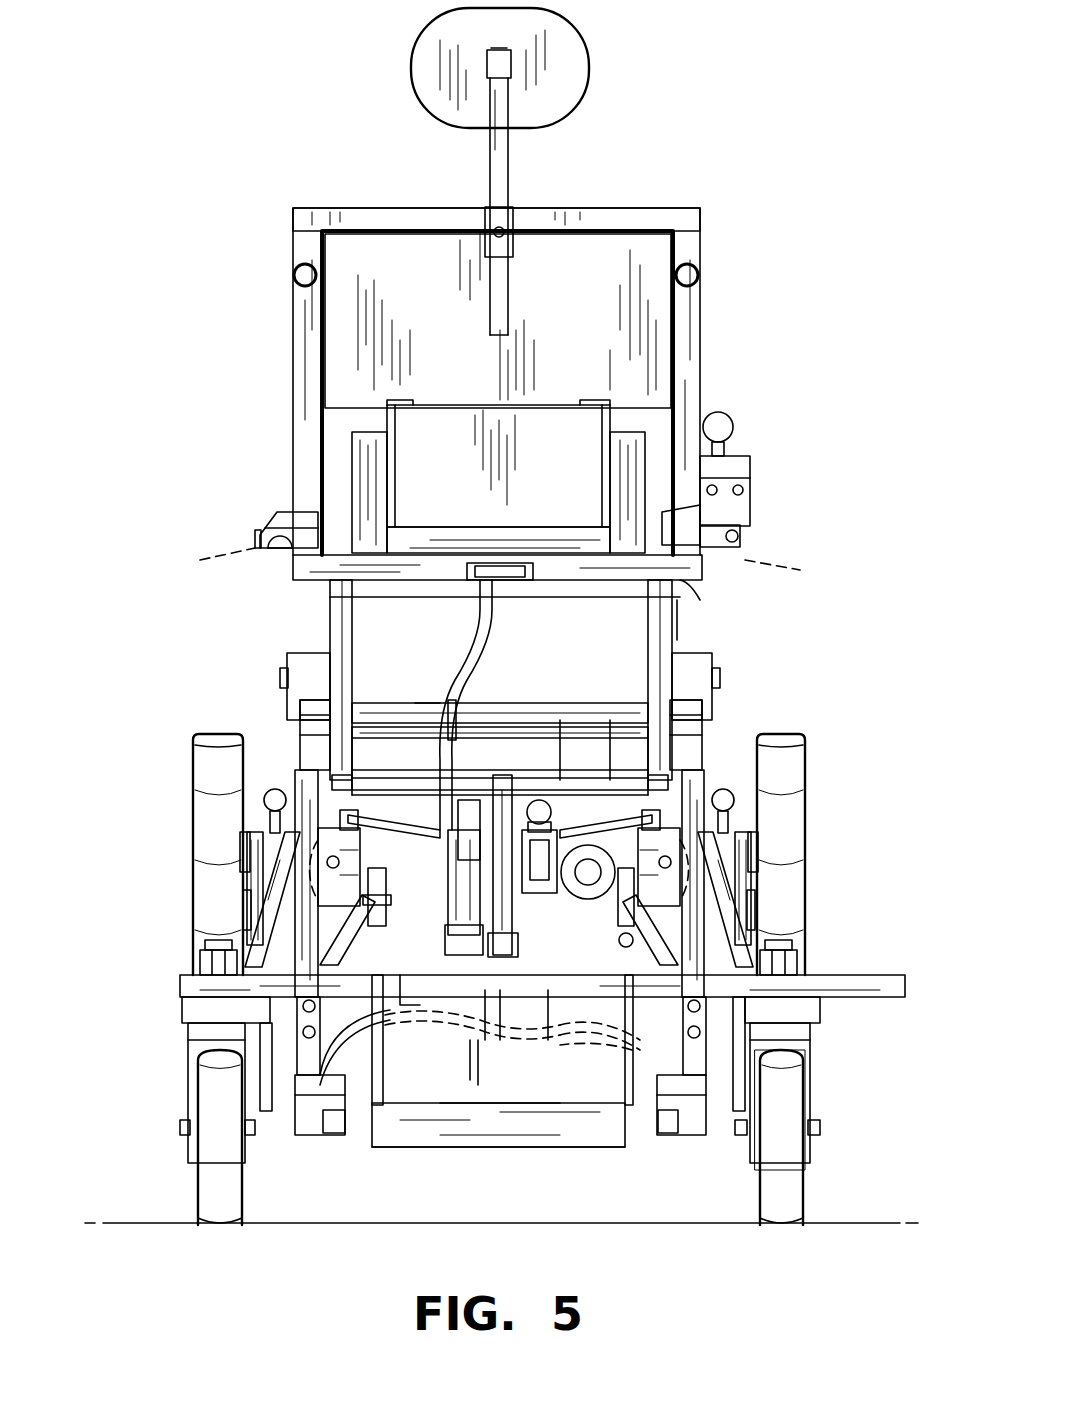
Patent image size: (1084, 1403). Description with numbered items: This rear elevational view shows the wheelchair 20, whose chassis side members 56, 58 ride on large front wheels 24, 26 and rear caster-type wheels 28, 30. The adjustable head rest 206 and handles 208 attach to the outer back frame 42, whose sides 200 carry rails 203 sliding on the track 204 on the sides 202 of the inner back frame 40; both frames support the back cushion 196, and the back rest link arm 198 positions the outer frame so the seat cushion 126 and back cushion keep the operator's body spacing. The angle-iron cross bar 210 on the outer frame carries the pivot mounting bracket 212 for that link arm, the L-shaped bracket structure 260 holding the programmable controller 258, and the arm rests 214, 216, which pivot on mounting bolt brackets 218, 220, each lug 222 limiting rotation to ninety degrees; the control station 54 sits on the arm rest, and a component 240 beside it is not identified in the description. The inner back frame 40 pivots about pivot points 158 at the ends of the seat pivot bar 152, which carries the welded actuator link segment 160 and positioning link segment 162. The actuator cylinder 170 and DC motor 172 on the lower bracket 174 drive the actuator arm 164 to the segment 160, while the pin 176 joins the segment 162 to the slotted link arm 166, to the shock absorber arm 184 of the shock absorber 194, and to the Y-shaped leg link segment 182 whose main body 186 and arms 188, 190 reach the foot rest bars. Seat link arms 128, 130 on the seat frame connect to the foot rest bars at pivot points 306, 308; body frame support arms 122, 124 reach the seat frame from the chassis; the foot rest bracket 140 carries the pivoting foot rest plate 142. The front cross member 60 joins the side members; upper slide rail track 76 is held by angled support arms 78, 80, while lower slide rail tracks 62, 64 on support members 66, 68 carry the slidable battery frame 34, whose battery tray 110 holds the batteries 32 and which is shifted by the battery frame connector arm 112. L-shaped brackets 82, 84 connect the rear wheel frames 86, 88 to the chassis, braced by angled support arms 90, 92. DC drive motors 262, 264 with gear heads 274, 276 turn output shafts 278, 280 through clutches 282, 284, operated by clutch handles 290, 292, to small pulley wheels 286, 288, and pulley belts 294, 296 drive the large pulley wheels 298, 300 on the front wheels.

The wheelchair 20 is at (168, 108).
The adjustable head rest 206 is at (598, 44).
The sides of the outer back frame 200 is at (292, 310).
The outer back frame 42 is at (703, 318).
The back cushion 196 is at (604, 287).
The handles 208 is at (296, 272).
The rails 203 is at (335, 325).
The programmable controller 258 is at (528, 415).
The track 204 is at (350, 433).
The sides of the inner back frame 202 is at (392, 462).
The L-shaped bracket structure 260 is at (420, 530).
The mounting bolt bracket 218 is at (266, 530).
The lug 222 is at (284, 512).
The joystick 240 is at (732, 422).
The control station 54 is at (752, 448).
The angle-iron cross bar 210 is at (320, 572).
The pivot mounting bracket 212 is at (512, 563).
The arm rest 214 is at (235, 552).
The arm rest 216 is at (780, 566).
The mounting bolt bracket 220 is at (703, 568).
The seat link arm 128 is at (328, 652).
The seat link arm 130 is at (690, 652).
The inner back frame 40 is at (685, 620).
The pivot point 306 is at (288, 668).
The pivot point 308 is at (712, 668).
The back rest link arm 198 is at (478, 630).
The seat cushion 126 is at (416, 700).
The actuator link segment 160 is at (495, 740).
The arm of leg link segment 188 is at (446, 738).
The arm of leg link segment 190 is at (562, 740).
The seat pivot bar 152 is at (608, 740).
The chassis side member 56 is at (300, 735).
The chassis side member 58 is at (706, 742).
The pivot points 158 is at (300, 768).
The front wheel 24 is at (215, 748).
The front wheel 26 is at (790, 742).
The clutch handle 290 is at (264, 796).
The clutch handle 292 is at (735, 800).
The gear head 274 is at (290, 830).
The gear head 276 is at (718, 832).
The DC drive motor 262 is at (318, 840).
The DC drive motor 264 is at (760, 858).
The output shaft 278 is at (247, 885).
The output shaft 280 is at (752, 882).
The clutch 282 is at (245, 852).
The clutch 284 is at (758, 850).
The small pulley wheel 286 is at (248, 908).
The small pulley wheel 288 is at (756, 908).
The angled support arm 90 is at (330, 950).
The angled support arm 92 is at (668, 948).
The angled support arm 78 is at (225, 963).
The angled support arm 80 is at (760, 930).
The wheel frame 86 is at (215, 965).
The wheel frame 88 is at (800, 960).
The L-shaped bracket 84 is at (800, 988).
The body frame support arm 122 is at (362, 815).
The body frame support arm 124 is at (618, 822).
The main body 186 is at (480, 830).
The actuator arm 164 is at (535, 808).
The shock absorber arm 184 is at (462, 948).
The shock absorber 194 is at (372, 912).
The upper slide rail track 76 is at (627, 932).
The actuator cylinder 170 is at (538, 890).
The DC motor 172 is at (588, 900).
The lower bracket 174 is at (383, 990).
The foot rest plate 142 is at (633, 1110).
The battery frame connector arm 112 is at (425, 965).
The positioning link segment 162 is at (500, 965).
The slot link pin 176 is at (548, 965).
The slotted link arm 166 is at (488, 1000).
The support member 66 is at (320, 1012).
The lower slide rail track 64 is at (684, 1012).
The foot rest bracket 140 is at (330, 1138).
The cross member 60 is at (640, 1048).
The lower slide rail track 62 is at (385, 1060).
The L-shaped bracket 82 is at (275, 1028).
The leg link segment 182 is at (494, 1048).
The batteries 32 is at (548, 1147).
The slidable battery frame 34 is at (448, 1150).
The battery tray 110 is at (572, 1148).
The support member 68 is at (770, 1028).
The caster-type wheel 28 is at (215, 1190).
The caster-type wheel 30 is at (790, 1195).
The pulley belt 294 is at (262, 1092).
The pulley belt 296 is at (745, 1092).
The large pulley wheel 298 is at (268, 1112).
The large pulley wheel 300 is at (736, 1112).